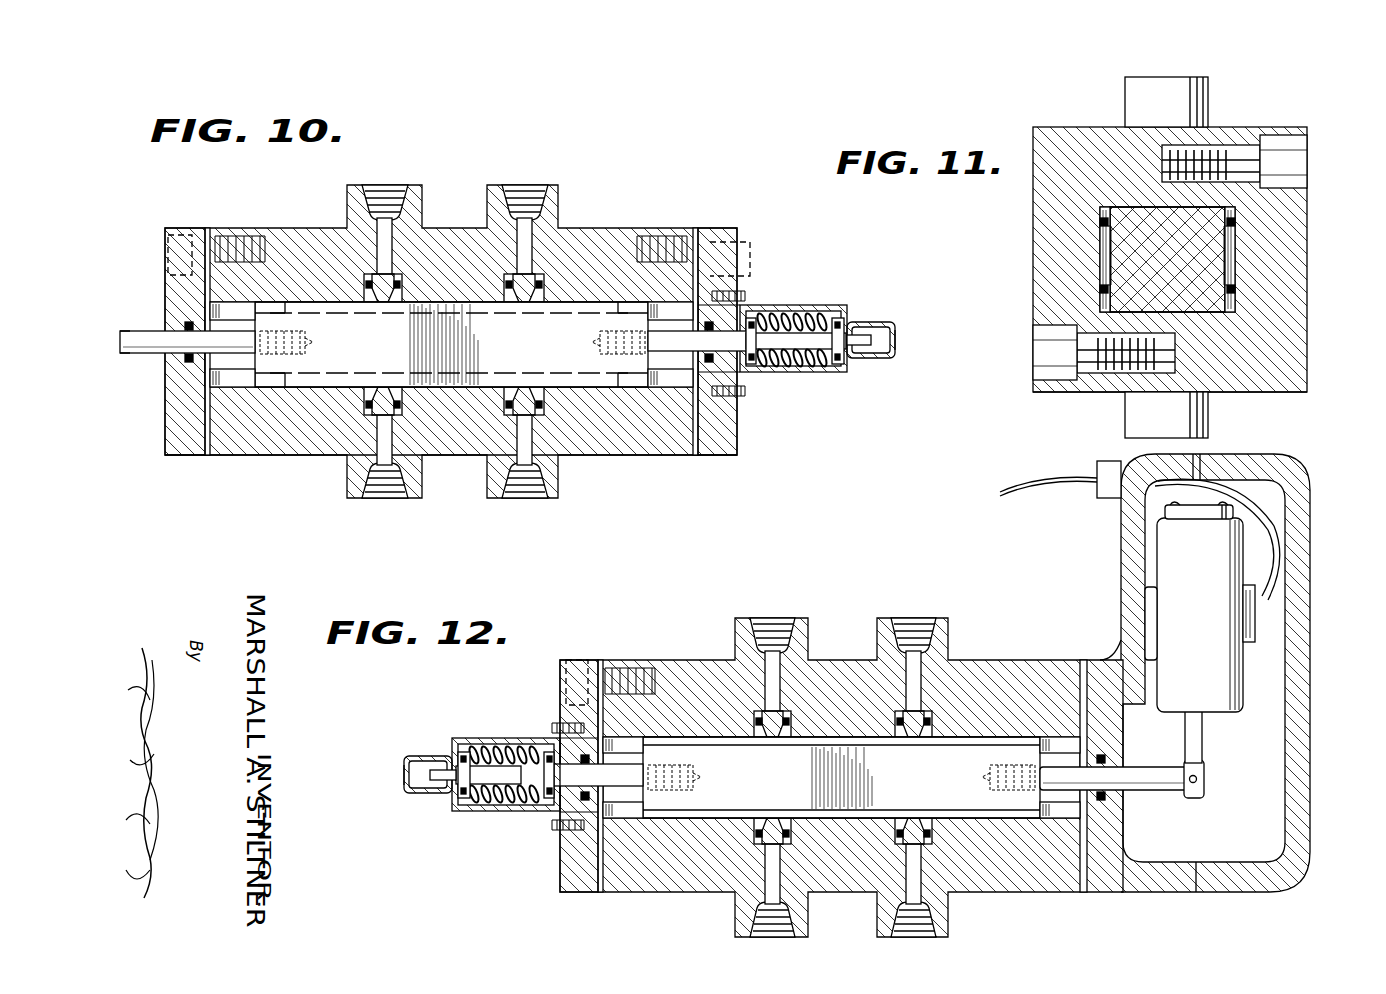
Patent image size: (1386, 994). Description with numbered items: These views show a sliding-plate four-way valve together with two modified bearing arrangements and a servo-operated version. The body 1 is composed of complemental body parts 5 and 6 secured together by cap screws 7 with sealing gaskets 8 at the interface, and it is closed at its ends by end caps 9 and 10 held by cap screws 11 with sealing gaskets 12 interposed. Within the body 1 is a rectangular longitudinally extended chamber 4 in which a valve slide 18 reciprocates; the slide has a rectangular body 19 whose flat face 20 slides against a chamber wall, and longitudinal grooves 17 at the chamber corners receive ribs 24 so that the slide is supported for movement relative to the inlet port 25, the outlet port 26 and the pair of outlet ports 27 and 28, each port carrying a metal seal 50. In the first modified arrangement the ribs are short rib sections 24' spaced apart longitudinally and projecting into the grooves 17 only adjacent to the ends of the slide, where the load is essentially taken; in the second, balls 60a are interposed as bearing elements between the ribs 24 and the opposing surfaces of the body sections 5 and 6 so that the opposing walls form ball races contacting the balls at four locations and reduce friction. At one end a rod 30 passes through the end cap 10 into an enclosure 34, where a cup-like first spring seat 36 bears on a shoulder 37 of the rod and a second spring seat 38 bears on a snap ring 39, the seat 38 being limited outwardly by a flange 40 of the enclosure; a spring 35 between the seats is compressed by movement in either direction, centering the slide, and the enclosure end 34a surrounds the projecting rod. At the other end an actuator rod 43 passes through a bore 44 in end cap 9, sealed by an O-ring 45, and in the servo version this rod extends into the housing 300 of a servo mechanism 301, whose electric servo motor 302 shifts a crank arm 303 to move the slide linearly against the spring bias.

In FIG. 10, the body 1 is at (666, 186).
In FIG. 11, the body 1 is at (1062, 110).
In FIG. 12, the body 1 is at (662, 626).
In FIG. 10, the chamber 4 is at (466, 302).
In FIG. 12, the chamber 4 is at (848, 738).
In FIG. 10, the body part 5 is at (282, 454).
In FIG. 11, the body part 5 is at (1296, 378).
In FIG. 10, the body part 6 is at (302, 232).
In FIG. 11, the body part 6 is at (1042, 138).
In FIG. 11, the cap screw 7 is at (1300, 152).
In FIG. 11, the sealing gasket 8 is at (1246, 128).
In FIG. 10, the end cap 9 is at (176, 230).
In FIG. 10, the end cap 10 is at (722, 235).
In FIG. 12, the end cap 10 is at (568, 866).
In FIG. 10, the cap screw 11 is at (168, 275).
In FIG. 12, the cap screw 11 is at (578, 660).
In FIG. 10, the sealing gasket 12 is at (225, 203).
In FIG. 12, the sealing gasket 12 is at (604, 660).
In FIG. 10, the groove 17 is at (226, 310).
In FIG. 11, the groove 17 is at (1106, 206).
In FIG. 12, the groove 17 is at (622, 744).
In FIG. 10, the valve slide 18 is at (458, 392).
In FIG. 11, the valve slide 18 is at (1208, 322).
In FIG. 12, the valve slide 18 is at (850, 828).
In FIG. 11, the rectangular body 19 is at (1167, 259).
In FIG. 10, the slide face 20 is at (446, 300).
In FIG. 12, the slide face 20 is at (830, 738).
In FIG. 11, the rib 24 is at (1168, 247).
In FIG. 12, the rib 24 is at (841, 777).
In FIG. 10, the rib section 24' is at (451, 344).
In FIG. 10, the inlet port 25 is at (394, 224).
In FIG. 12, the inlet port 25 is at (921, 670).
In FIG. 10, the outlet port 26 is at (548, 224).
In FIG. 12, the outlet port 26 is at (776, 668).
In FIG. 10, the outlet port 27 is at (384, 446).
In FIG. 12, the outlet port 27 is at (914, 878).
In FIG. 10, the outlet port 28 is at (526, 452).
In FIG. 12, the outlet port 28 is at (774, 876).
In FIG. 12, the rod 30 is at (580, 775).
In FIG. 10, the enclosure 34 is at (769, 305).
In FIG. 12, the enclosure 34 is at (480, 738).
In FIG. 10, the housing end 34a is at (896, 336).
In FIG. 12, the housing end 34a is at (406, 774).
In FIG. 10, the spring 35 is at (812, 314).
In FIG. 12, the spring 35 is at (498, 740).
In FIG. 10, the first spring seat 36 is at (754, 364).
In FIG. 12, the first spring seat 36 is at (546, 806).
In FIG. 10, the shoulder 37 is at (798, 350).
In FIG. 12, the shoulder 37 is at (500, 790).
In FIG. 10, the second spring seat 38 is at (876, 324).
In FIG. 12, the second spring seat 38 is at (438, 756).
In FIG. 10, the snap ring 39 is at (860, 346).
In FIG. 12, the snap ring 39 is at (442, 780).
In FIG. 10, the flange 40 is at (840, 366).
In FIG. 12, the flange 40 is at (458, 806).
In FIG. 10, the actuator rod 43 is at (144, 354).
In FIG. 12, the actuator rod 43 is at (1154, 792).
In FIG. 10, the bore 44 is at (166, 332).
In FIG. 12, the bore 44 is at (1122, 772).
In FIG. 10, the O-ring 45 is at (187, 362).
In FIG. 12, the O-ring 45 is at (1102, 802).
In FIG. 10, the metal seal 50 is at (365, 288).
In FIG. 12, the metal seal 50 is at (754, 724).
In FIG. 11, the ball 60a is at (1104, 288).
In FIG. 12, the housing 300 is at (1296, 796).
In FIG. 12, the servo mechanism 301 is at (1250, 672).
In FIG. 12, the electric servo motor 302 is at (1200, 607).
In FIG. 12, the crank arm 303 is at (1200, 740).